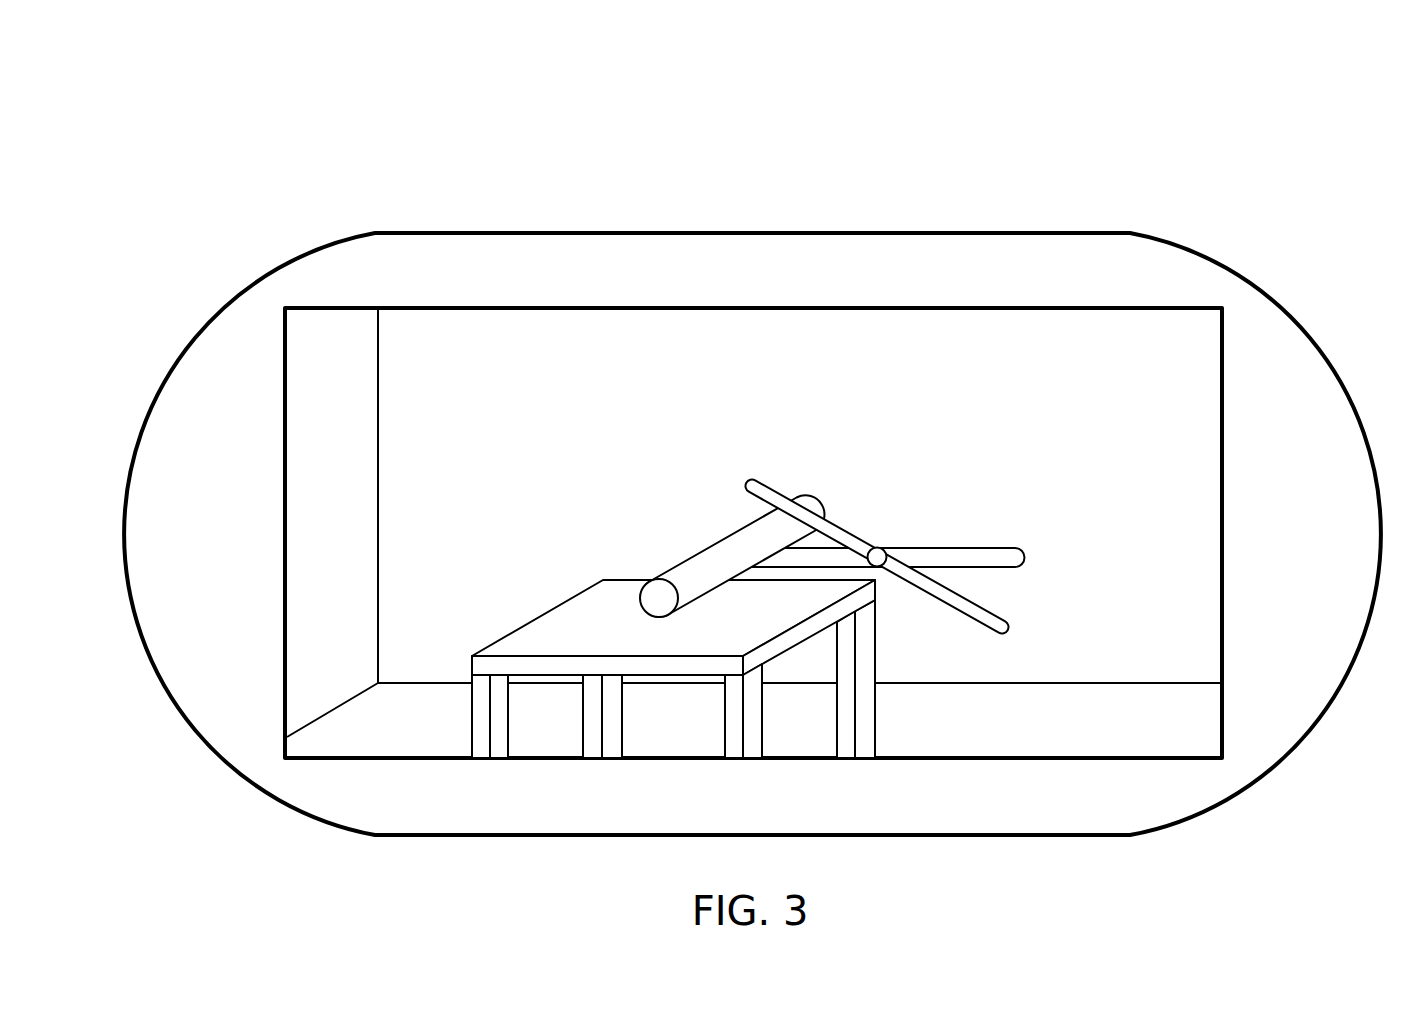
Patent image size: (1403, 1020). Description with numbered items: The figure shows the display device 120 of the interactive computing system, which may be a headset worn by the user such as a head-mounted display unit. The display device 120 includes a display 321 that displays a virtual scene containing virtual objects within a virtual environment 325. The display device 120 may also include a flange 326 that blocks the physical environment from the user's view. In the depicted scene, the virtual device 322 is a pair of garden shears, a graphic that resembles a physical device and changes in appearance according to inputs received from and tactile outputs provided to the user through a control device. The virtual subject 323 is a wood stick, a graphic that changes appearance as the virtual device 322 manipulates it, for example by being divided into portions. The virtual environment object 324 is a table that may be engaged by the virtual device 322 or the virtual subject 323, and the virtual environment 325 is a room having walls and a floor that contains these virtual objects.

The display device 120 is at (752, 454).
The display 321 is at (1167, 308).
The virtual device 322 is at (969, 548).
The virtual subject 323 is at (753, 527).
The virtual environment object 324 is at (603, 607).
The virtual environment 325 is at (942, 442).
The flange 326 is at (792, 232).